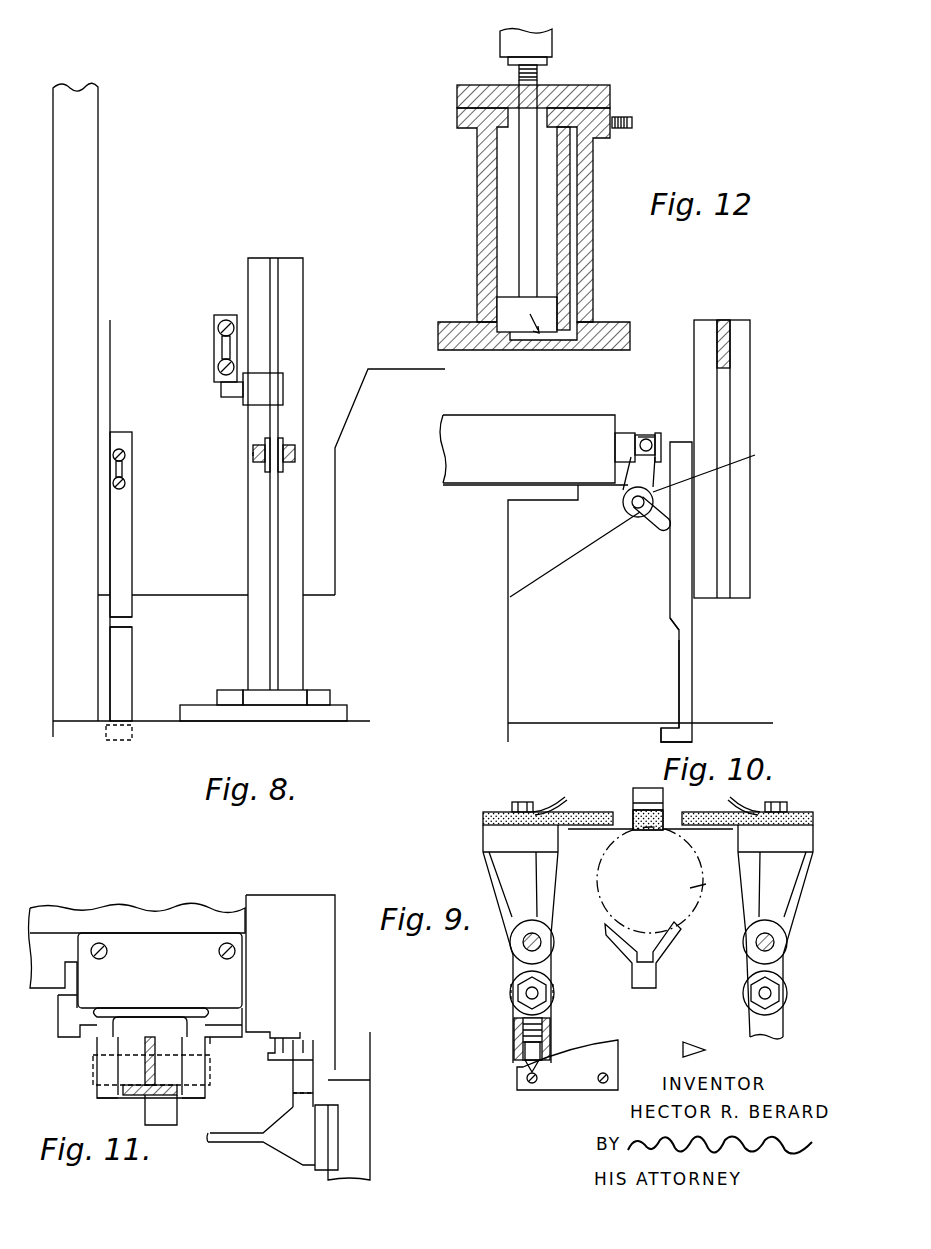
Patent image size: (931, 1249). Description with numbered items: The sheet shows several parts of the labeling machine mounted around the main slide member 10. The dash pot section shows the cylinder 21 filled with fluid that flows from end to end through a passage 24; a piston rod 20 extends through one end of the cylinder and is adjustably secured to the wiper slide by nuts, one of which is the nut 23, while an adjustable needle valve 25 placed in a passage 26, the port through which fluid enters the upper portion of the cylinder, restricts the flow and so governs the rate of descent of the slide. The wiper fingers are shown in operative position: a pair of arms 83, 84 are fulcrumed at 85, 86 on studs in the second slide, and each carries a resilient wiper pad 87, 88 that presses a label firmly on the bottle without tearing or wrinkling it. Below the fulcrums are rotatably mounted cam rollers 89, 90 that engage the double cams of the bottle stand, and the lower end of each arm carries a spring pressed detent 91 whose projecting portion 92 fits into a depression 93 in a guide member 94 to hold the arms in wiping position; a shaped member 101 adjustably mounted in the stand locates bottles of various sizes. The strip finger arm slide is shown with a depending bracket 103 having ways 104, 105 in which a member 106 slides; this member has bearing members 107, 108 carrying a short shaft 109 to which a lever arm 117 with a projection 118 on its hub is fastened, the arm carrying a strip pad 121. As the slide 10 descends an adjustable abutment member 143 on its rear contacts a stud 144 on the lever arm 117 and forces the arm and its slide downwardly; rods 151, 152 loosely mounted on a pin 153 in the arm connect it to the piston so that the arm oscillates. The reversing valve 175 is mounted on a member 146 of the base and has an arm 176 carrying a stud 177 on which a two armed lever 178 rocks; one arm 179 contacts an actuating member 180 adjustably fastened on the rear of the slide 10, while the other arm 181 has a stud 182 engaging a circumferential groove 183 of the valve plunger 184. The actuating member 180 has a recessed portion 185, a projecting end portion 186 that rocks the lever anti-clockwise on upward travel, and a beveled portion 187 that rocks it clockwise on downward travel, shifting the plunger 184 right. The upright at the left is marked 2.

In FIG. 8, the upright post 2 is at (62, 628).
In FIG. 8, the slide member 10 is at (335, 566).
In FIG. 10, the slide member 10 is at (742, 523).
In FIG. 11, the slide member 10 is at (262, 1140).
In FIG. 12, the piston rod 20 is at (539, 75).
In FIG. 12, the cylinder 21 is at (593, 283).
In FIG. 12, the nut 23 is at (508, 60).
In FIG. 12, the passage 24 is at (577, 262).
In FIG. 12, the adjustable needle valve 25 is at (627, 118).
In FIG. 12, the passage 26 is at (582, 110).
In FIG. 9, the arm 83 is at (505, 868).
In FIG. 9, the arm 84 is at (783, 865).
In FIG. 9, the fulcrum 85 is at (524, 943).
In FIG. 9, the fulcrum 86 is at (772, 945).
In FIG. 9, the wiper pad 87 is at (585, 808).
In FIG. 9, the wiper pad 88 is at (697, 815).
In FIG. 9, the cam roller 89 is at (553, 993).
In FIG. 9, the cam roller 90 is at (749, 984).
In FIG. 9, the spring pressed detent 91 is at (523, 1052).
In FIG. 9, the projecting portion 92 is at (525, 1073).
In FIG. 9, the depression 93 is at (538, 1069).
In FIG. 9, the guide member 94 is at (588, 1084).
In FIG. 9, the shaped member 101 is at (678, 933).
In FIG. 11, the depending bracket 103 is at (140, 942).
In FIG. 11, the way 104 is at (224, 1022).
In FIG. 11, the way 105 is at (65, 1018).
In FIG. 11, the member 106 is at (145, 1022).
In FIG. 8, the bearing member 107 is at (330, 692).
In FIG. 11, the bearing member 107 is at (103, 1098).
In FIG. 8, the bearing member 108 is at (224, 690).
In FIG. 11, the bearing member 108 is at (202, 1095).
In FIG. 11, the short shaft 109 is at (93, 1066).
In FIG. 8, the lever arm 117 is at (299, 655).
In FIG. 11, the lever arm 117 is at (160, 1045).
In FIG. 11, the projection 118 is at (170, 1120).
In FIG. 9, the strip pad 121 is at (632, 812).
In FIG. 8, the adjustable abutment member 143 is at (214, 348).
In FIG. 8, the stud 144 is at (221, 390).
In FIG. 10, the member 146 is at (640, 679).
In FIG. 8, the rod 151 is at (294, 445).
In FIG. 8, the rod 152 is at (255, 445).
In FIG. 8, the pin 153 is at (253, 455).
In FIG. 10, the reversing valve 175 is at (545, 424).
In FIG. 10, the arm 176 is at (582, 547).
In FIG. 10, the stud 177 is at (632, 523).
In FIG. 10, the two armed lever 178 is at (722, 468).
In FIG. 10, the arm 179 is at (650, 537).
In FIG. 8, the actuating member 180 is at (128, 582).
In FIG. 10, the actuating member 180 is at (677, 585).
In FIG. 10, the arm 181 is at (640, 435).
In FIG. 10, the stud 182 is at (652, 437).
In FIG. 10, the circumferential groove 183 is at (645, 437).
In FIG. 10, the valve plunger 184 is at (660, 440).
In FIG. 8, the recessed portion 185 is at (128, 665).
In FIG. 10, the recessed portion 185 is at (678, 667).
In FIG. 8, the projecting end portion 186 is at (118, 742).
In FIG. 10, the projecting end portion 186 is at (660, 737).
In FIG. 8, the beveled portion 187 is at (132, 620).
In FIG. 10, the beveled portion 187 is at (672, 626).